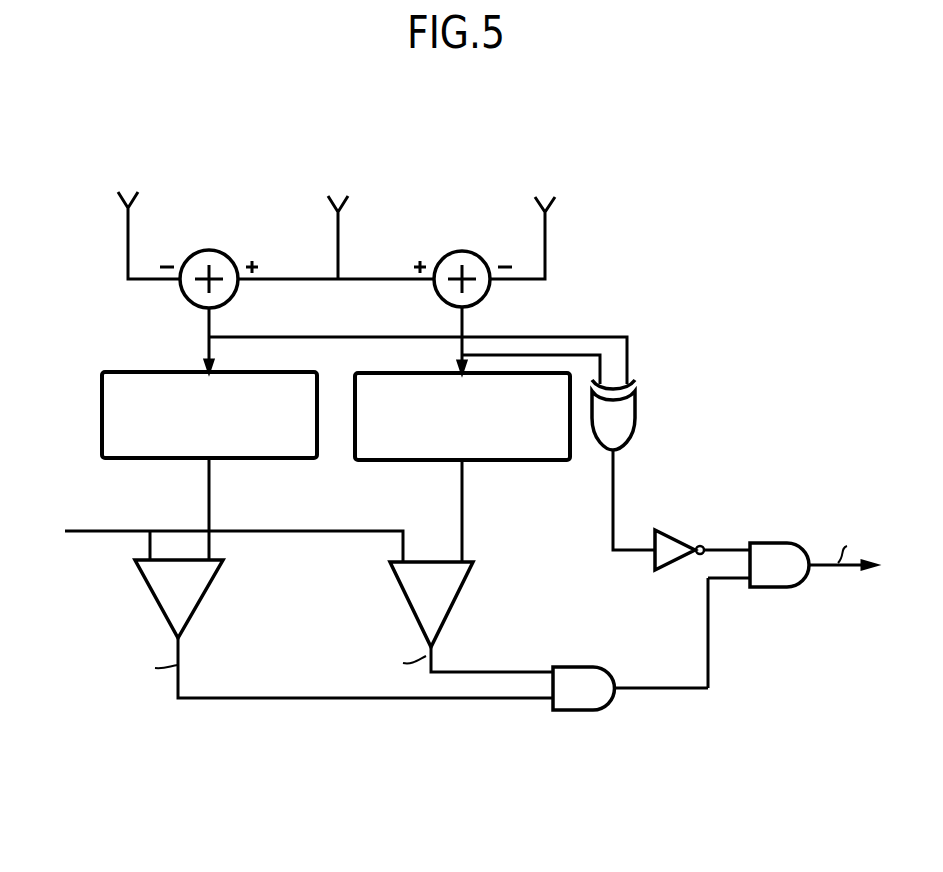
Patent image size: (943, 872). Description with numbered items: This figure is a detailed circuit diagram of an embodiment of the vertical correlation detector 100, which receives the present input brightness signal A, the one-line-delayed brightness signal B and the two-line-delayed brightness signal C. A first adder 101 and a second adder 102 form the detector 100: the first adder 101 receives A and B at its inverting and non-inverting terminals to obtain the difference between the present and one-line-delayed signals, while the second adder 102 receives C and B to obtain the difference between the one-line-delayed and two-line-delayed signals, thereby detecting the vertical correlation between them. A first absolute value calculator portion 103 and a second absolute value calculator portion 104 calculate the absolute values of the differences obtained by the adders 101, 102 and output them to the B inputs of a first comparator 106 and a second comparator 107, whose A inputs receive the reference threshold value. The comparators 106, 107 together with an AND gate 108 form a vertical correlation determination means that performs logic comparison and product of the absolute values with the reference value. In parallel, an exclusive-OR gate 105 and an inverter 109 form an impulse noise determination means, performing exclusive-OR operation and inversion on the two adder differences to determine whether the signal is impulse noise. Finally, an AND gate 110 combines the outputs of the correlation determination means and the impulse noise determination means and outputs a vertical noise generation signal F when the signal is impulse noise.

The vertical correlation detector 100 is at (620, 268).
The first adder 101 is at (209, 249).
The second adder 102 is at (462, 251).
The first absolute value calculator portion 103 is at (102, 408).
The second absolute value calculator portion 104 is at (366, 461).
The exclusive-OR gate 105 is at (637, 412).
The first comparator 106 is at (207, 597).
The second comparator 107 is at (460, 597).
The AND gate 108 is at (578, 712).
The inverter 109 is at (678, 532).
The AND gate 110 is at (784, 542).